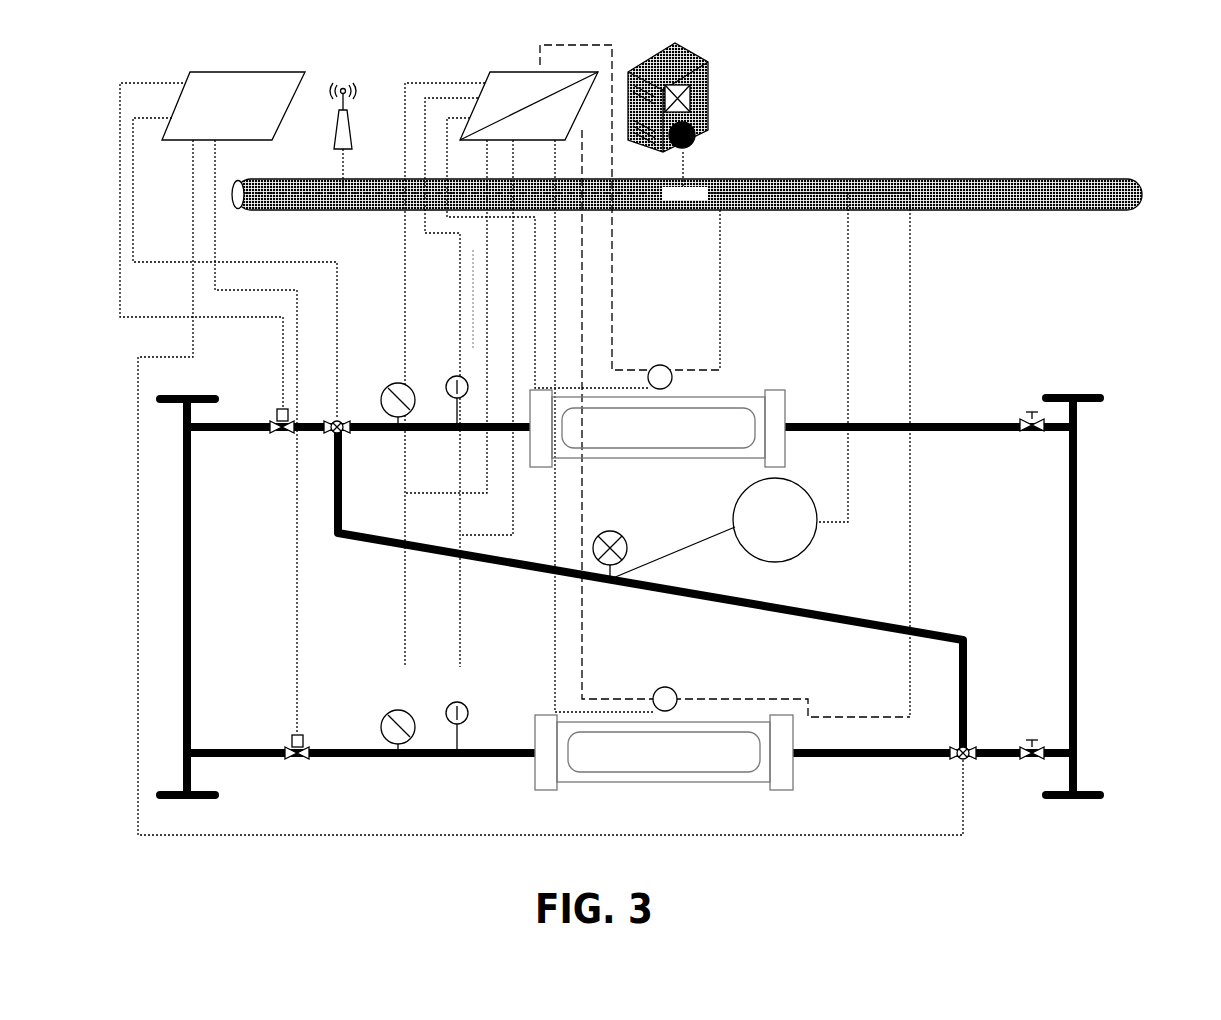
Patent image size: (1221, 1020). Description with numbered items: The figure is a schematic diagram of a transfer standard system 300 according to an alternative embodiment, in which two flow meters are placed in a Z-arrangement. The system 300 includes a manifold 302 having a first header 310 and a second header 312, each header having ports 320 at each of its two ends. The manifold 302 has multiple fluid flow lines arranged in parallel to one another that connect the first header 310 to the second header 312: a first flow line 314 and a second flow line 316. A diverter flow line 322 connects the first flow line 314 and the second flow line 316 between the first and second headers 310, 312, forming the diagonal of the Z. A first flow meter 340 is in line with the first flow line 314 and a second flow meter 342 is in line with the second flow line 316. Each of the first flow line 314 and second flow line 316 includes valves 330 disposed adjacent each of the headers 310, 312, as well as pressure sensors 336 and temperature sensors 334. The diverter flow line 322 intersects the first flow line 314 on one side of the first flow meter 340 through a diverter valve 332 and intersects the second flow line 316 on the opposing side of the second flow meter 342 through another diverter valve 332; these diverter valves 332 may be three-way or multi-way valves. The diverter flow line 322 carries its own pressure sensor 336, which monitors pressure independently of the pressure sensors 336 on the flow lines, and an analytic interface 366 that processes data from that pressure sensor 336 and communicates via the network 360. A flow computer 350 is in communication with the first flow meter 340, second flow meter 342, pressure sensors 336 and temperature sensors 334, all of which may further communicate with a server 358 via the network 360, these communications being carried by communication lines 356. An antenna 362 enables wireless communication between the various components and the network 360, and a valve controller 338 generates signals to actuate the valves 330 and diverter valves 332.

The transfer standard system 300 is at (1037, 297).
The manifold 302 is at (1120, 477).
The first header 310 is at (182, 525).
The second header 312 is at (1080, 600).
The first flow line 314 is at (860, 422).
The second flow line 316 is at (355, 758).
The ports 320 is at (182, 393).
The diverter flow line 322 is at (832, 613).
The valves 330 is at (280, 432).
The diverter valve 332 is at (337, 418).
The temperature sensors 334 is at (453, 392).
The pressure sensors 336 is at (382, 397).
The valve controller 338 is at (240, 72).
The first flow meter 340 is at (733, 402).
The second flow meter 342 is at (743, 773).
The flow computer 350 is at (510, 72).
The communication lines 356 is at (720, 283).
The server 358 is at (695, 52).
The network 360 is at (1145, 197).
The antenna 362 is at (352, 88).
The analytic interface 366 is at (783, 483).